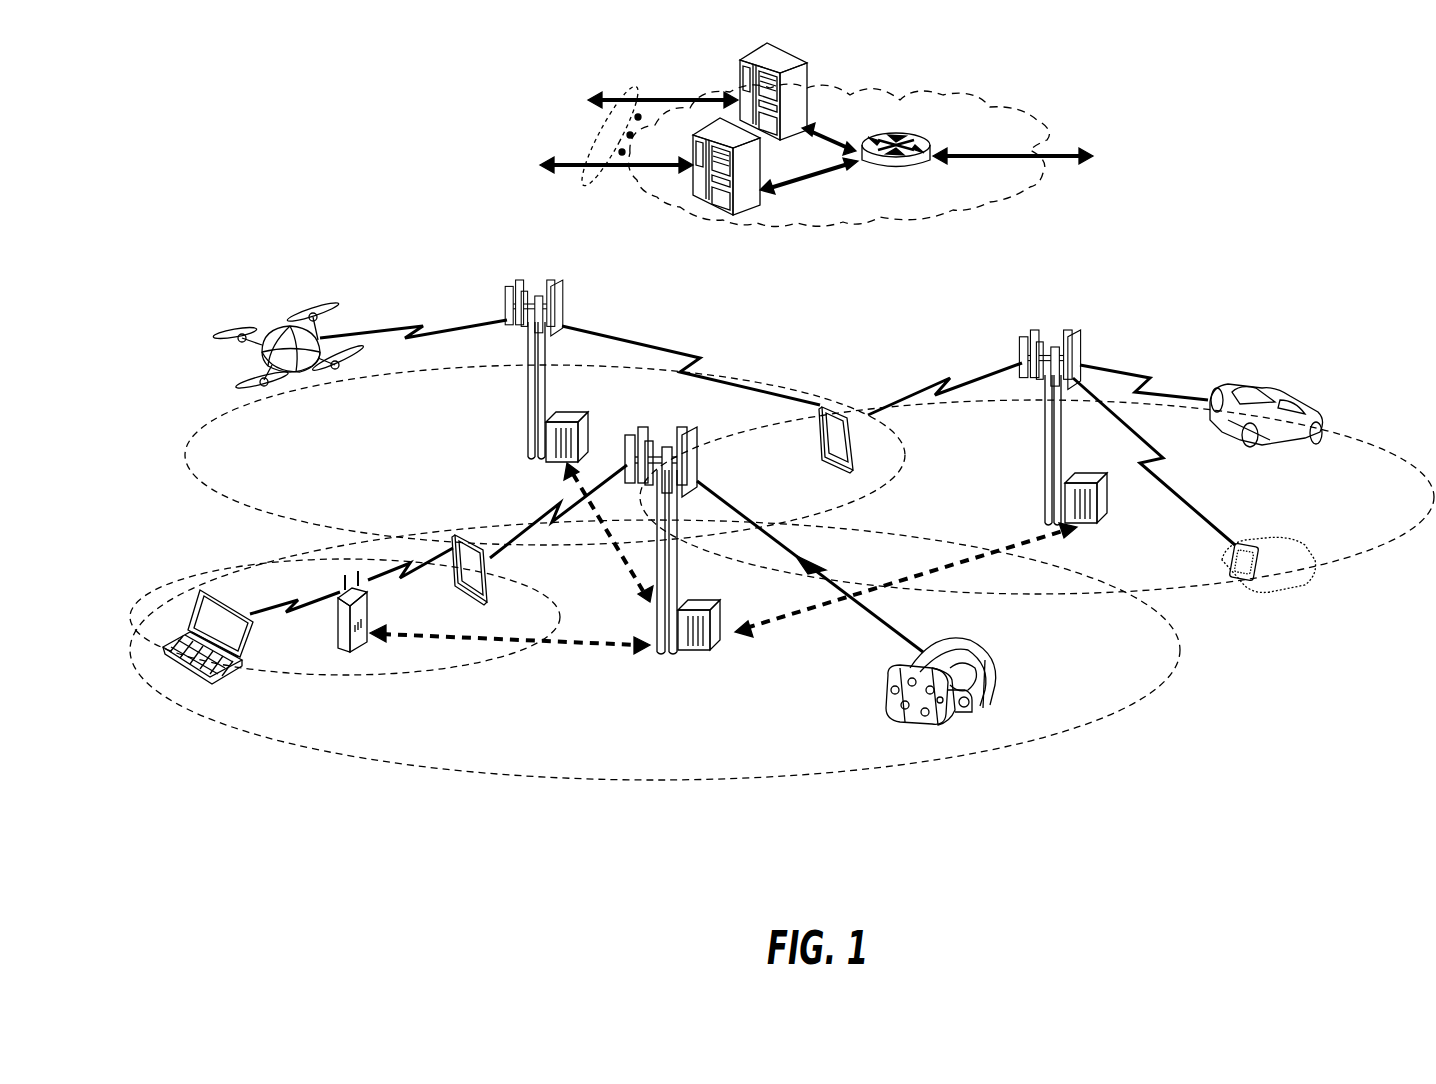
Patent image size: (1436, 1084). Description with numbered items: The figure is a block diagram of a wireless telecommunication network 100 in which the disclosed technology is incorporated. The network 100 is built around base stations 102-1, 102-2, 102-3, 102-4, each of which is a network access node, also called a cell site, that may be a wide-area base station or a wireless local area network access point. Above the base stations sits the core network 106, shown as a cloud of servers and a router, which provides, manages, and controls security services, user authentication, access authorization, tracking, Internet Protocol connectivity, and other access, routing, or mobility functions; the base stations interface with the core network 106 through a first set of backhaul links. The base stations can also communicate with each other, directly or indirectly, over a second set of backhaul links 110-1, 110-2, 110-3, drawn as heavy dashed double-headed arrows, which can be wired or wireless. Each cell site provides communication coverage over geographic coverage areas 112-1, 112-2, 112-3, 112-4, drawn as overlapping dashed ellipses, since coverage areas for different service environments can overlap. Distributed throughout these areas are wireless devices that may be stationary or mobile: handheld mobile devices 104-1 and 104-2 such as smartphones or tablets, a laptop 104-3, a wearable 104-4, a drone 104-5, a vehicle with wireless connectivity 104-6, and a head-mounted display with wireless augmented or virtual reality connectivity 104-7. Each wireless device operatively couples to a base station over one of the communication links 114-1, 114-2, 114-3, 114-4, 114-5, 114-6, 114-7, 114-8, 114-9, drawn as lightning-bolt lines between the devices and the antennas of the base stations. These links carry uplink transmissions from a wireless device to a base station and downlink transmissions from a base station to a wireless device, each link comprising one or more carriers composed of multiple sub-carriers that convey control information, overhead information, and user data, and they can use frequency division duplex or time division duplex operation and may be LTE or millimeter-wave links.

The wireless telecommunication network 100 is at (1340, 140).
The core network 106 is at (930, 226).
The base station 102-1 is at (665, 655).
The base station 102-2 is at (526, 408).
The base station 102-3 is at (1045, 440).
The base station 102-4 is at (340, 640).
The handheld mobile device 104-1 is at (492, 570).
The handheld mobile device 104-2 is at (815, 445).
The laptop 104-3 is at (185, 680).
The wearable 104-4 is at (1250, 545).
The drone 104-5 is at (298, 374).
The vehicle with wireless connectivity 104-6 is at (1285, 388).
The head-mounted display 104-7 is at (1000, 672).
The backhaul link 110-1 is at (405, 637).
The backhaul link 110-2 is at (965, 565).
The backhaul link 110-3 is at (625, 567).
The geographic coverage area 112-1 is at (588, 782).
The geographic coverage area 112-2 is at (470, 690).
The geographic coverage area 112-3 is at (243, 520).
The geographic coverage area 112-4 is at (1340, 442).
The communication link 114-1 is at (822, 577).
The communication link 114-2 is at (552, 518).
The communication link 114-3 is at (263, 618).
The communication link 114-4 is at (410, 582).
The communication link 114-5 is at (420, 325).
The communication link 114-6 is at (698, 362).
The communication link 114-7 is at (945, 380).
The communication link 114-8 is at (1165, 492).
The communication link 114-9 is at (1140, 372).